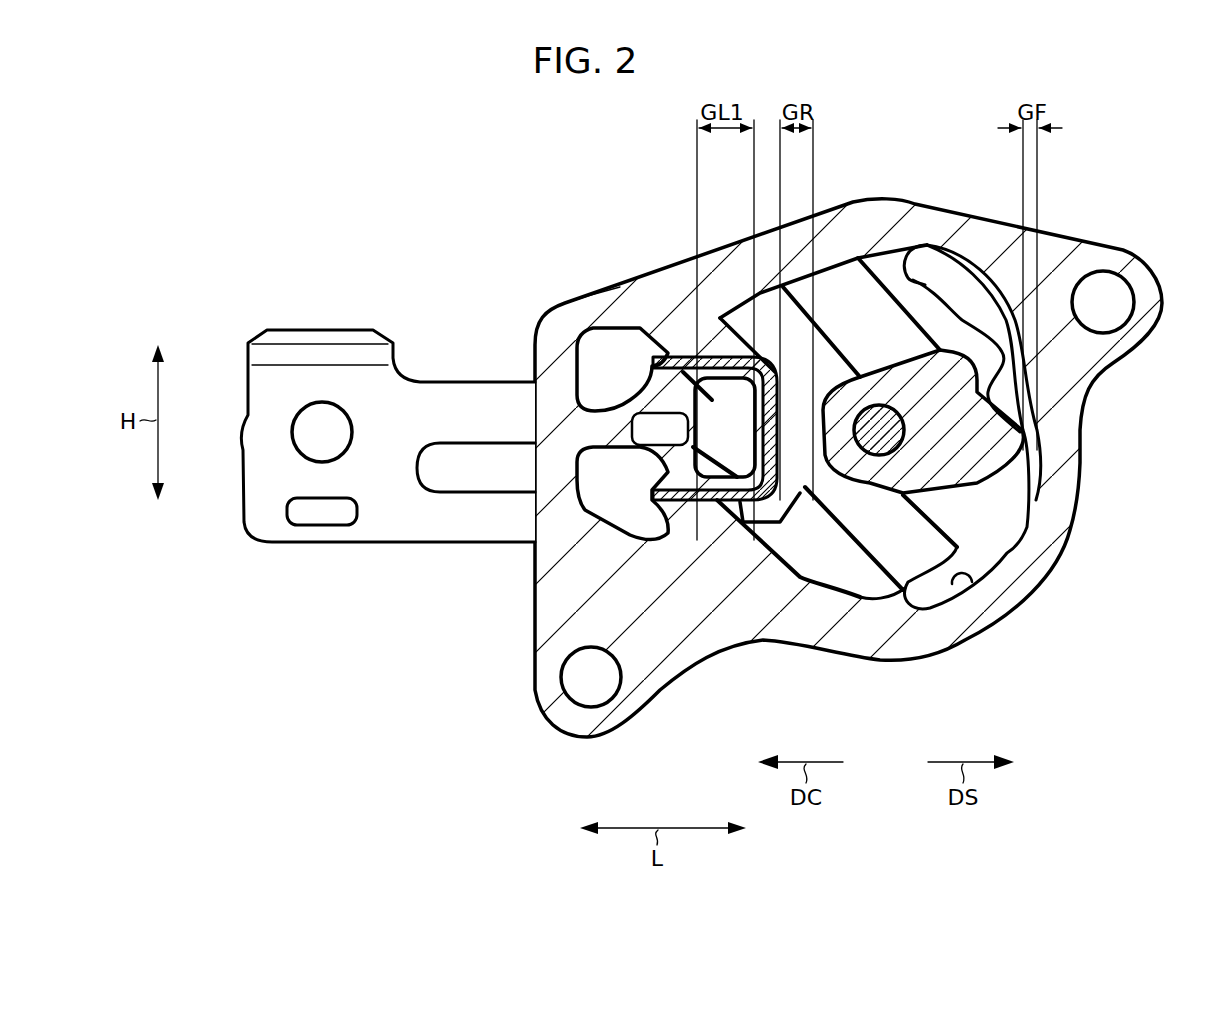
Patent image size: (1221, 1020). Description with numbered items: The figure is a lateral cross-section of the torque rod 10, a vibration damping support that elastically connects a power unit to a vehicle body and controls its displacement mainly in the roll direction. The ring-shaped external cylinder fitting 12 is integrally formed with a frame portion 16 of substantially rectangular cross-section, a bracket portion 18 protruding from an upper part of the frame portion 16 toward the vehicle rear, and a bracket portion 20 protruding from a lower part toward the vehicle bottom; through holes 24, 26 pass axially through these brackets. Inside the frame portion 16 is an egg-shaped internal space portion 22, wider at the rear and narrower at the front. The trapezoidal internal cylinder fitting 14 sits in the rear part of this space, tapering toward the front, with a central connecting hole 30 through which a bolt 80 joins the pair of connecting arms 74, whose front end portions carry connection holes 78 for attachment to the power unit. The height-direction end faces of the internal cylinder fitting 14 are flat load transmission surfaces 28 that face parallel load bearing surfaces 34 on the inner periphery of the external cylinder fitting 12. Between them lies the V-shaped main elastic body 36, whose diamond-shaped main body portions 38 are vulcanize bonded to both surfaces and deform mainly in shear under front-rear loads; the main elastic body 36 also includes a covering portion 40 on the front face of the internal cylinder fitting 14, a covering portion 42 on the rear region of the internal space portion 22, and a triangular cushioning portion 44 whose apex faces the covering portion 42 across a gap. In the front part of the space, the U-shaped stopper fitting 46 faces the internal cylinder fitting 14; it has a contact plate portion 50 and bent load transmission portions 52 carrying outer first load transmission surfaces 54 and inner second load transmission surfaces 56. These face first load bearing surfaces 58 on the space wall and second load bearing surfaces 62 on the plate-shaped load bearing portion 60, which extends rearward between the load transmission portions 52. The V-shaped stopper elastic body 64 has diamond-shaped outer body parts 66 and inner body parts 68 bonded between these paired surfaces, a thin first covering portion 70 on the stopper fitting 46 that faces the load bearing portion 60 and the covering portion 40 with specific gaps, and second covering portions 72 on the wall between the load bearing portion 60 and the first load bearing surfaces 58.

The torque rod 10 is at (1128, 180).
The external cylinder fitting 12 is at (1078, 532).
The internal cylinder fitting 14 is at (962, 347).
The frame portion 16 is at (913, 648).
The bracket portion 18 is at (1147, 284).
The bracket portion 20 is at (567, 724).
The internal space portion 22 is at (960, 600).
The through hole 24 is at (1106, 330).
The through hole 26 is at (615, 678).
The load transmission surface 28 is at (870, 372).
The connecting hole 30 is at (882, 463).
The load bearing surface 34 is at (836, 280).
The main elastic body 36 is at (935, 275).
The main body portion 38 is at (840, 265).
The covering portion 40 is at (822, 468).
The covering portion 42 is at (1040, 507).
The cushioning portion 44 is at (1040, 445).
The stopper fitting 46 is at (672, 512).
The contact plate portion 50 is at (800, 393).
The load transmission portion 52 is at (630, 340).
The first load transmission surface 54 is at (680, 355).
The second load transmission surface 56 is at (562, 344).
The first load bearing surface 58 is at (705, 325).
The load bearing portion 60 is at (560, 463).
The second load bearing surface 62 is at (560, 400).
The stopper elastic body 64 is at (640, 310).
The outer body part 66 is at (730, 343).
The inner body part 68 is at (698, 400).
The first covering portion 70 is at (784, 508).
The second covering portion 72 is at (560, 322).
The connecting arm 74 is at (247, 340).
The connection hole 78 is at (317, 457).
The bolt 80 is at (1008, 562).